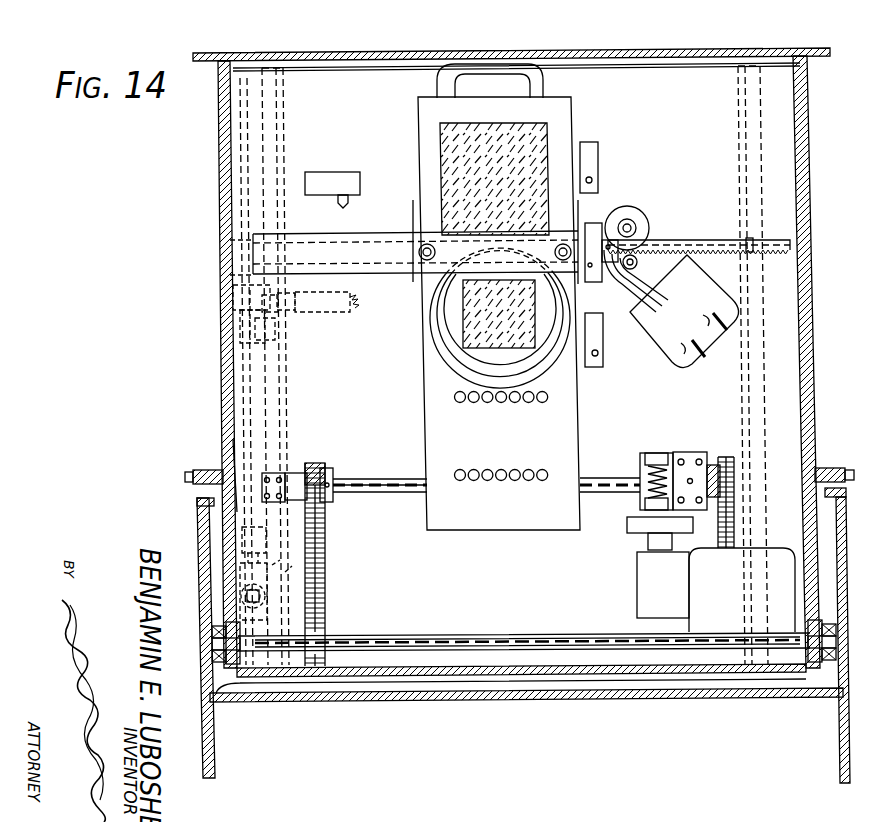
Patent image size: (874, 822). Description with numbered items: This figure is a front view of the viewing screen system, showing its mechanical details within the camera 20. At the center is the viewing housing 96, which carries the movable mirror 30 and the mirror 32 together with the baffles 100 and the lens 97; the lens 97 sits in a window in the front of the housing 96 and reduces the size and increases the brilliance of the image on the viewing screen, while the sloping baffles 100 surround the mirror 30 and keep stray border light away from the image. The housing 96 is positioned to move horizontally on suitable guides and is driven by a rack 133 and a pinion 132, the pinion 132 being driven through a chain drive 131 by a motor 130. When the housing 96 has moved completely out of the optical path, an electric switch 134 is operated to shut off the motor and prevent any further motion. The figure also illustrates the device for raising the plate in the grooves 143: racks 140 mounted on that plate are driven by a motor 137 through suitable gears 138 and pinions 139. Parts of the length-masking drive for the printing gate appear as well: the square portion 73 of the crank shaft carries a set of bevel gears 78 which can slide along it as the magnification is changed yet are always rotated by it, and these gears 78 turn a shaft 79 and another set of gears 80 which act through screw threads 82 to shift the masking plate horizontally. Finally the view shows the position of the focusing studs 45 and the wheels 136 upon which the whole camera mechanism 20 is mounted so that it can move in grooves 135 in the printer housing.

The camera 20 is at (808, 194).
The movable mirror 30 is at (528, 343).
The mirror 32 is at (457, 150).
The focusing studs 45 is at (206, 470).
The square portion of shaft 73 is at (258, 600).
The bevel gears 78 is at (318, 556).
The shaft 79 is at (240, 168).
The gears 80 is at (228, 294).
The screw threads 82 is at (356, 310).
The viewing housing 96 is at (557, 112).
The lens 97 is at (462, 356).
The baffles 100 is at (452, 313).
The motor 130 is at (690, 355).
The chain drive 131 is at (668, 256).
The pinion 132 is at (635, 253).
The rack 133 is at (722, 240).
The electric switch 134 is at (327, 177).
The grooves 135 is at (240, 674).
The wheels 136 is at (213, 668).
The motor 137 is at (693, 585).
The gears 138 is at (642, 474).
The pinions 139 is at (327, 470).
The racks 140 is at (322, 540).
The grooves 143 is at (283, 93).